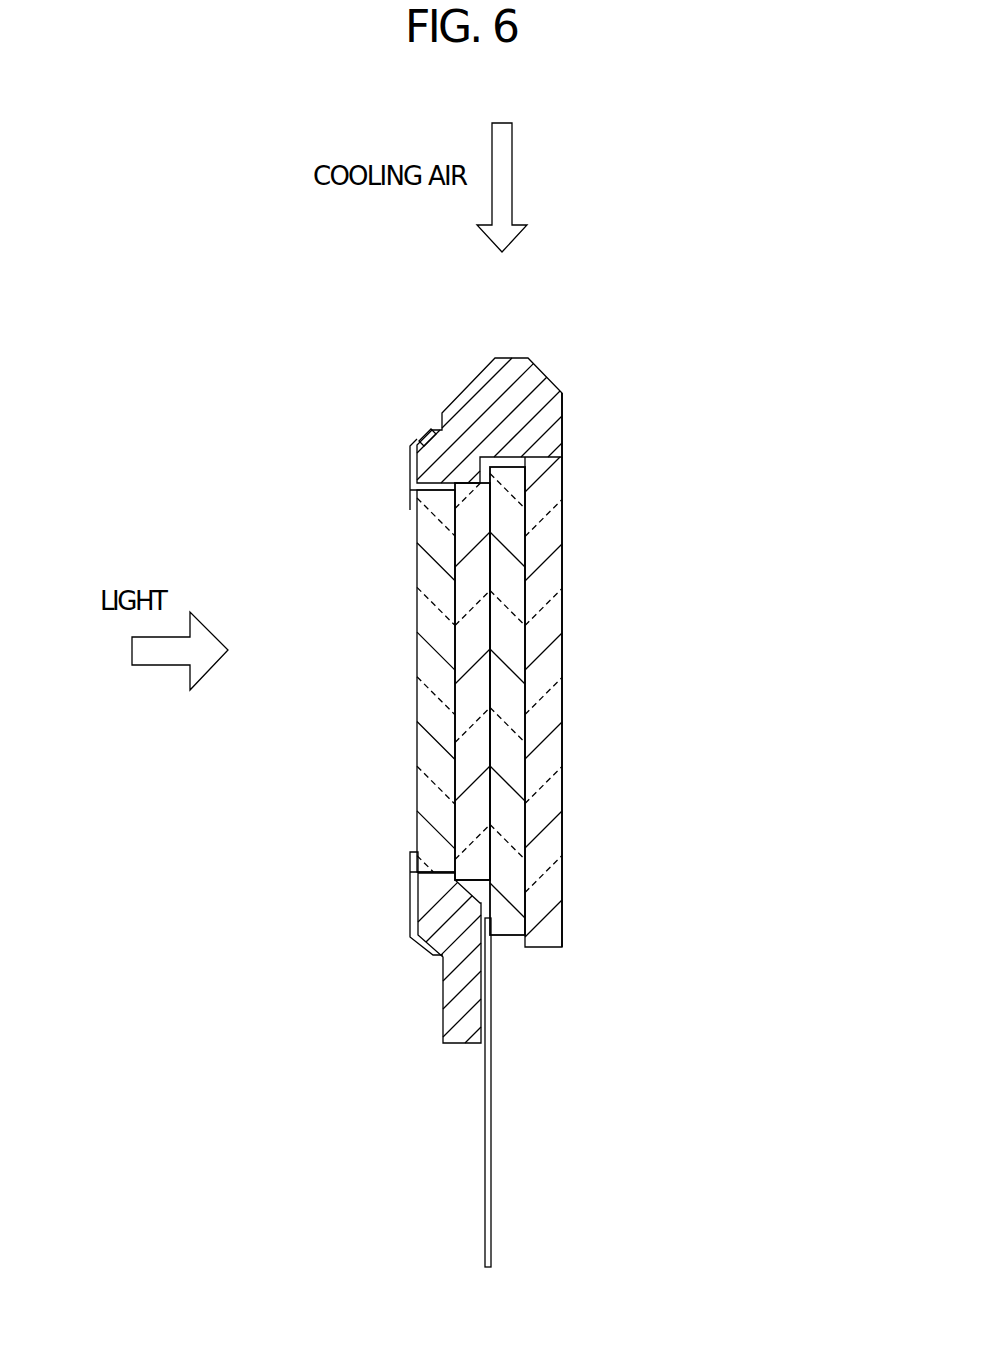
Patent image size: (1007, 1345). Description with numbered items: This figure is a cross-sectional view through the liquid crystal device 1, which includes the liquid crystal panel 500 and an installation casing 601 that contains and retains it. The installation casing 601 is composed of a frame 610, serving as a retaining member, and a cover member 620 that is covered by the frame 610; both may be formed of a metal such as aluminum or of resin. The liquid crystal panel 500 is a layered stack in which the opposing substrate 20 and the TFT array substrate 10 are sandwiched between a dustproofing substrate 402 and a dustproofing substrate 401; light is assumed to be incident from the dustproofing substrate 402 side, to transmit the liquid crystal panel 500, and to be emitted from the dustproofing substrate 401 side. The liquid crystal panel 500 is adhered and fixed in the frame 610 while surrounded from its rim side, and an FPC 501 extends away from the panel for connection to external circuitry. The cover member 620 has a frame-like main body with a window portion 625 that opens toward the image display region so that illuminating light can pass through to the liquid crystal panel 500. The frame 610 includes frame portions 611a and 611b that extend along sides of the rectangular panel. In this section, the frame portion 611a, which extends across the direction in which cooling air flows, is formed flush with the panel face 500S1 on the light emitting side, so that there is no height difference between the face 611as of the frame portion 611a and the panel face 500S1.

The liquid crystal device 1 is at (588, 268).
The installation casing 601 is at (462, 296).
The frame 610 is at (477, 405).
The cover member 620 is at (424, 433).
The window portion 625 is at (412, 502).
The frame portion 611a is at (540, 372).
The face of the light emitting side of the frame portion 611as is at (562, 415).
The frame portion 611b is at (450, 995).
The liquid crystal panel 500 is at (592, 632).
The panel face 500S1 is at (562, 577).
The dustproofing substrate 401 is at (547, 808).
The dustproofing substrate 402 is at (430, 790).
The TFT array substrate 10 is at (522, 737).
The opposing substrate 20 is at (470, 707).
The FPC 501 is at (484, 1155).